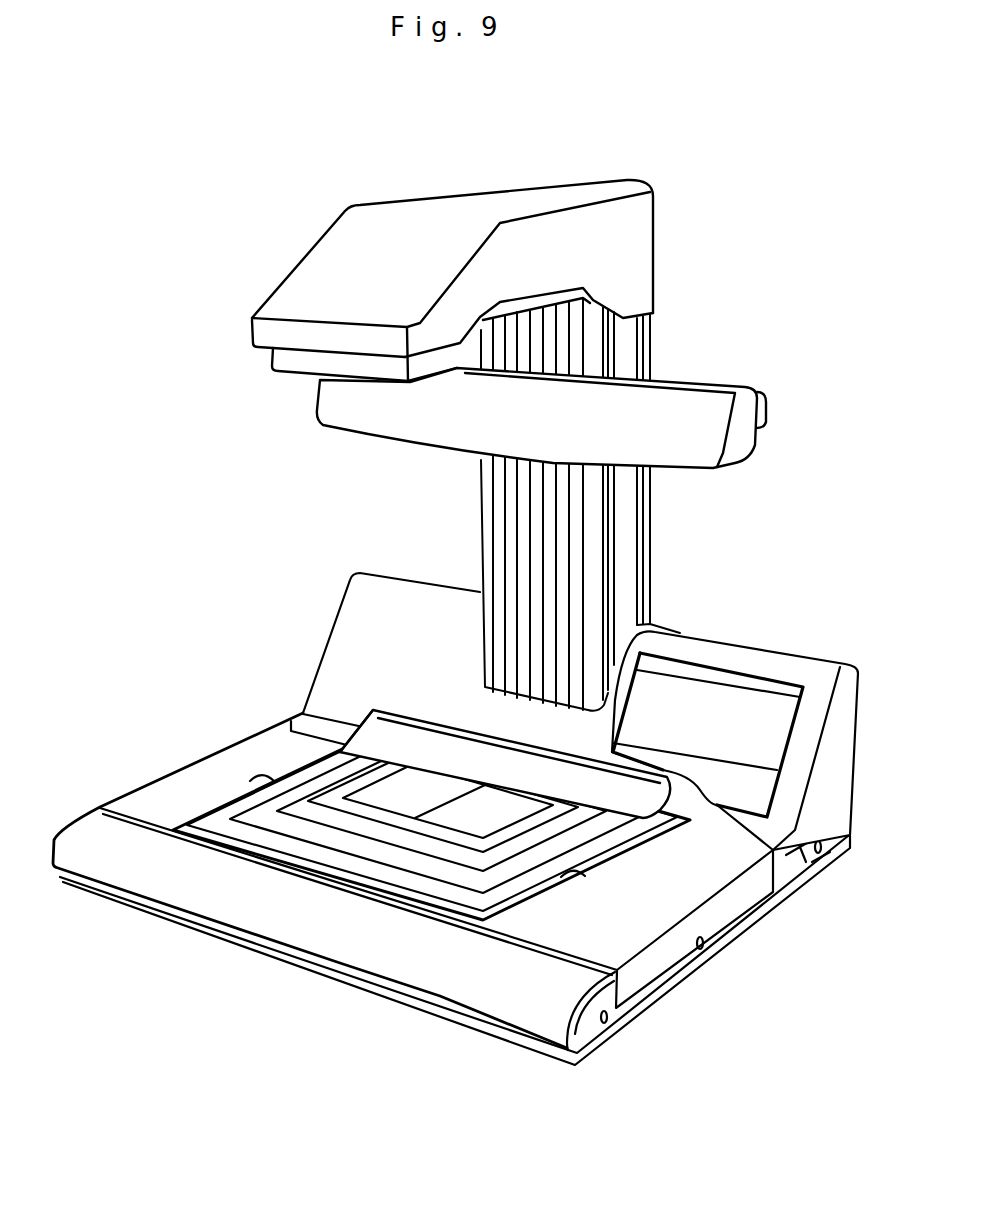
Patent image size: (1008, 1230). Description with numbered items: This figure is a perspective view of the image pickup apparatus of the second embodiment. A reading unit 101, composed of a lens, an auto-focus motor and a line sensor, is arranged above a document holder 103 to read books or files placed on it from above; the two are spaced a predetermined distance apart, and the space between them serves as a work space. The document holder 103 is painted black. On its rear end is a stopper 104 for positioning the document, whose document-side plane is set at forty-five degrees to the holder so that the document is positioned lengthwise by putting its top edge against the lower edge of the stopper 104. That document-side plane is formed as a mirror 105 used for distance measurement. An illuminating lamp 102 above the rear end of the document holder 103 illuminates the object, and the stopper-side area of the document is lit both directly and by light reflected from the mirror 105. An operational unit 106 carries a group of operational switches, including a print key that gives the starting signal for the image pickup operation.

The reading unit 101 is at (437, 205).
The illuminating lamp 102 is at (707, 388).
The document holder 103 is at (220, 817).
The stopper 104 is at (375, 707).
The mirror 105 is at (368, 724).
The operational unit 106 is at (763, 683).